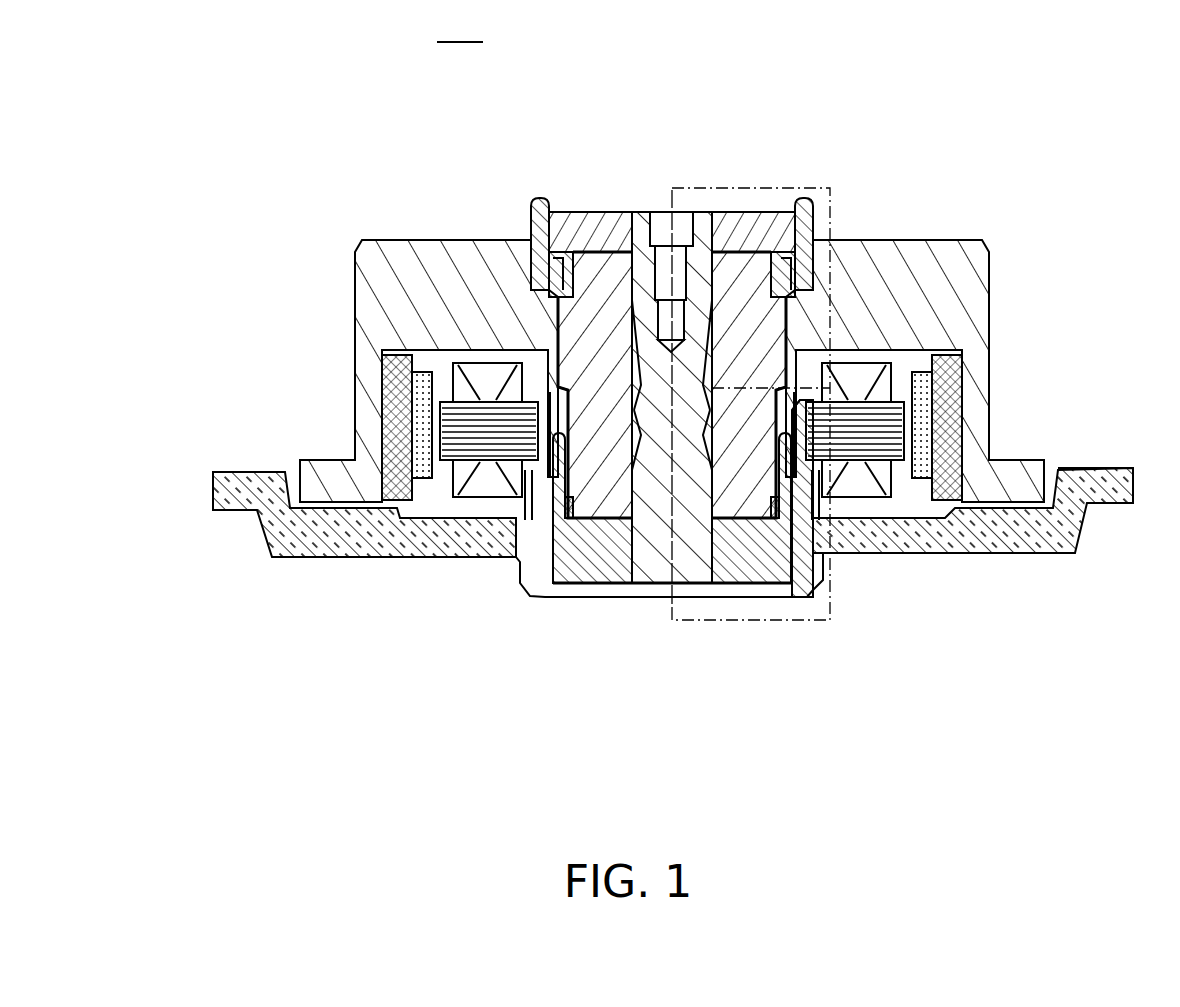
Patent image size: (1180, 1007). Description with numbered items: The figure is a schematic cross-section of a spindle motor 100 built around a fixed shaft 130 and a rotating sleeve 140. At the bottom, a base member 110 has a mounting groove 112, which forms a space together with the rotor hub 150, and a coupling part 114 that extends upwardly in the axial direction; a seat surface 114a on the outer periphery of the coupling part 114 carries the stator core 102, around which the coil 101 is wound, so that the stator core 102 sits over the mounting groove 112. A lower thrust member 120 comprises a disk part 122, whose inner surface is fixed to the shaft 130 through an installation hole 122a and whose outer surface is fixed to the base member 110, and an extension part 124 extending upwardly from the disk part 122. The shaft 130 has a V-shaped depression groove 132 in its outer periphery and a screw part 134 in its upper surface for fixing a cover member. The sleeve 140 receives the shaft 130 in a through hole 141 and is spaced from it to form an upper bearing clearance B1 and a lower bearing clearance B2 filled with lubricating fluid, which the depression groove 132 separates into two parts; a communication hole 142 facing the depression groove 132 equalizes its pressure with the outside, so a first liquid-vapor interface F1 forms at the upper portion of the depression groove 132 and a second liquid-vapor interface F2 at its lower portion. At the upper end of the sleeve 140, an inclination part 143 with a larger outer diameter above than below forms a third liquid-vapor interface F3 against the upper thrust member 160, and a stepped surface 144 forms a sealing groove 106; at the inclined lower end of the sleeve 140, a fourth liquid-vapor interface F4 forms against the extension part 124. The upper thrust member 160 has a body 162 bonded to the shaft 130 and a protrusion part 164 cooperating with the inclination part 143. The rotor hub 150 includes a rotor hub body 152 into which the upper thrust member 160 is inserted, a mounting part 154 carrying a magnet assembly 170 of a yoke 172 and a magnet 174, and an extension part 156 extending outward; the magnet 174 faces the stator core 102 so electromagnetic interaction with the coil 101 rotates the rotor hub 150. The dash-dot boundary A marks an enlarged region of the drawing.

The spindle motor 100 is at (460, 28).
The coil 101 is at (473, 497).
The stator core 102 is at (422, 483).
The sealing groove 106 is at (546, 288).
The base member 110 is at (947, 540).
The mounting groove 112 is at (1045, 478).
The coupling part 114 is at (797, 565).
The seat surface 114a is at (813, 452).
The lower thrust member 120 is at (593, 704).
The disk part 122 is at (596, 500).
The installation hole 122a is at (695, 560).
The extension part 124 is at (548, 500).
The shaft 130 is at (652, 565).
The depression groove 132 is at (792, 330).
The screw part 134 is at (678, 213).
The sleeve 140 is at (623, 565).
The through hole 141 is at (642, 213).
The communication hole 142 is at (895, 280).
The inclination part 143 is at (550, 275).
The stepped surface 144 is at (545, 267).
The rotor hub 150 is at (204, 275).
The rotor hub body 152 is at (375, 290).
The mounting part 154 is at (368, 380).
The extension part 156 is at (300, 458).
The upper thrust member 160 is at (722, 52).
The body 162 is at (742, 213).
The protrusion part 164 is at (778, 213).
The magnet assembly 170 is at (1112, 345).
The yoke 172 is at (957, 415).
The magnet 174 is at (927, 387).
The enlarged region A is at (832, 189).
The upper bearing clearance B1 is at (613, 280).
The lower bearing clearance B2 is at (730, 560).
The first liquid-vapor interface F1 is at (553, 387).
The second liquid-vapor interface F2 is at (548, 435).
The third liquid-vapor interface F3 is at (550, 210).
The fourth liquid-vapor interface F4 is at (805, 495).